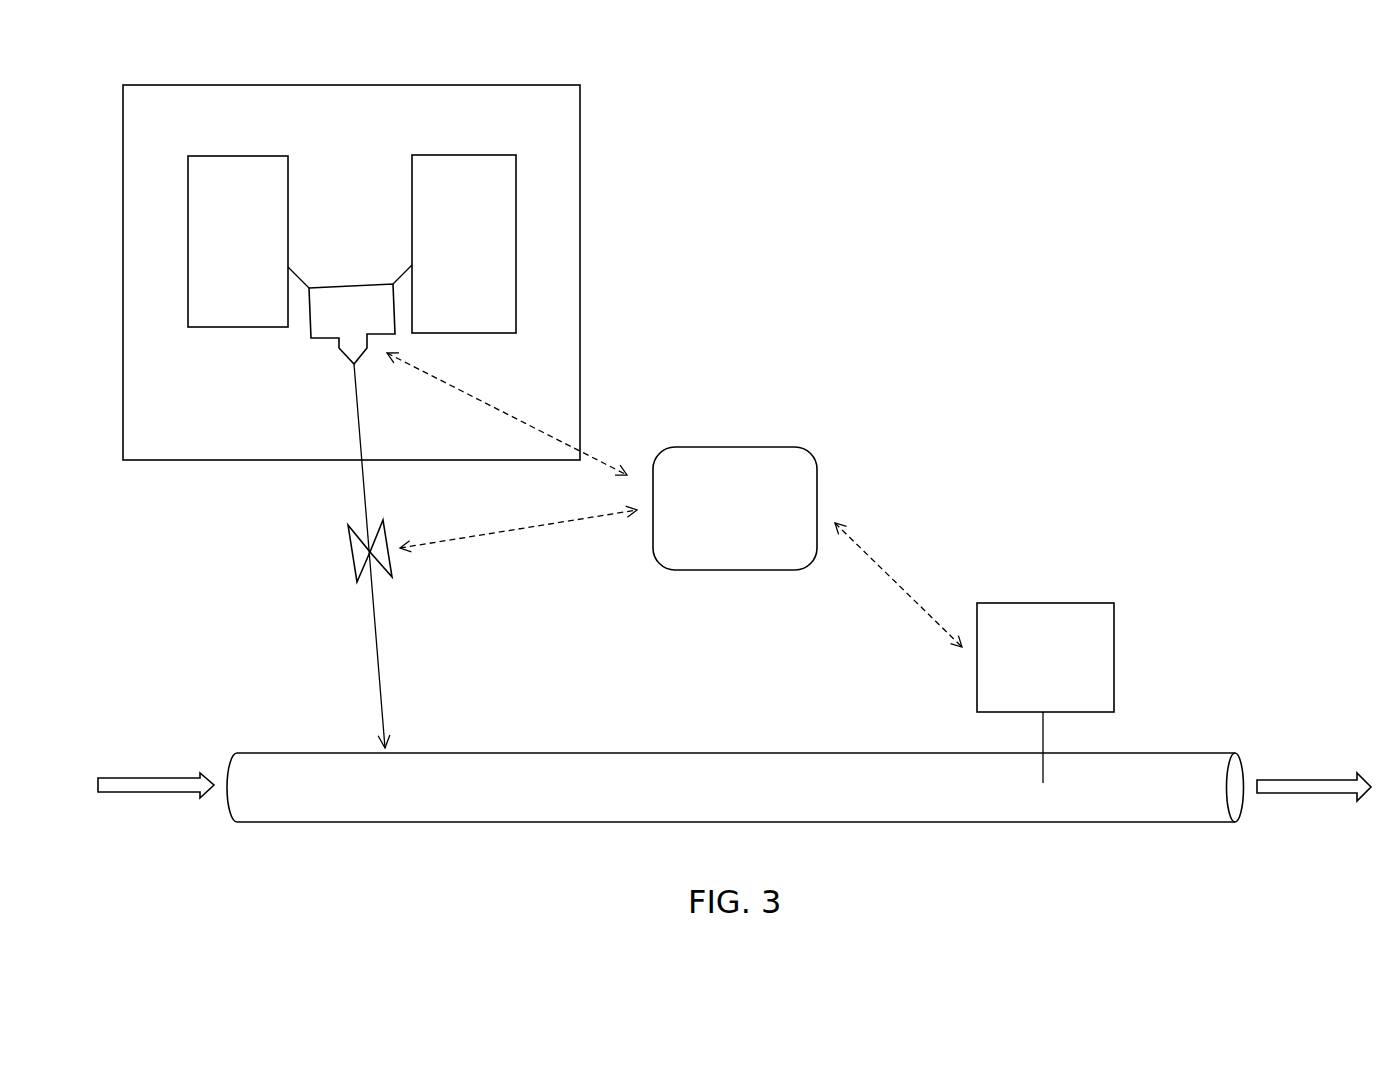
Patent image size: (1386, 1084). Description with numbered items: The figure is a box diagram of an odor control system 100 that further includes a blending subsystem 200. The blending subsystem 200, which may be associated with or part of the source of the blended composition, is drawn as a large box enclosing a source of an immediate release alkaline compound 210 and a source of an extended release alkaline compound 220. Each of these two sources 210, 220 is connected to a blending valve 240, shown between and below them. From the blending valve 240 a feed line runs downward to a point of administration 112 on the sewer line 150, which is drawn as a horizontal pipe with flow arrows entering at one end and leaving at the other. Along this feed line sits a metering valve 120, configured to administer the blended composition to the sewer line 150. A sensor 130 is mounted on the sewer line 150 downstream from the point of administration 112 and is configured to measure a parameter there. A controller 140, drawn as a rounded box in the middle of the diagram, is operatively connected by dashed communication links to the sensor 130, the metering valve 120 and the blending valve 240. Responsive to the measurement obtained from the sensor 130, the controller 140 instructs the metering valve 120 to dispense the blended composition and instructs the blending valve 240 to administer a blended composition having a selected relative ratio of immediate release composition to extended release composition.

The system 100 is at (948, 195).
The blending subsystem 200 is at (365, 160).
The source of an immediate release alkaline compound 210 is at (248, 241).
The source of an extended release alkaline compound 220 is at (454, 244).
The blending valve 240 is at (352, 324).
The point of administration 112 is at (400, 556).
The metering valve 120 is at (348, 550).
The controller 140 is at (674, 500).
The sensor 130 is at (1045, 693).
The sewer line 150 is at (734, 787).